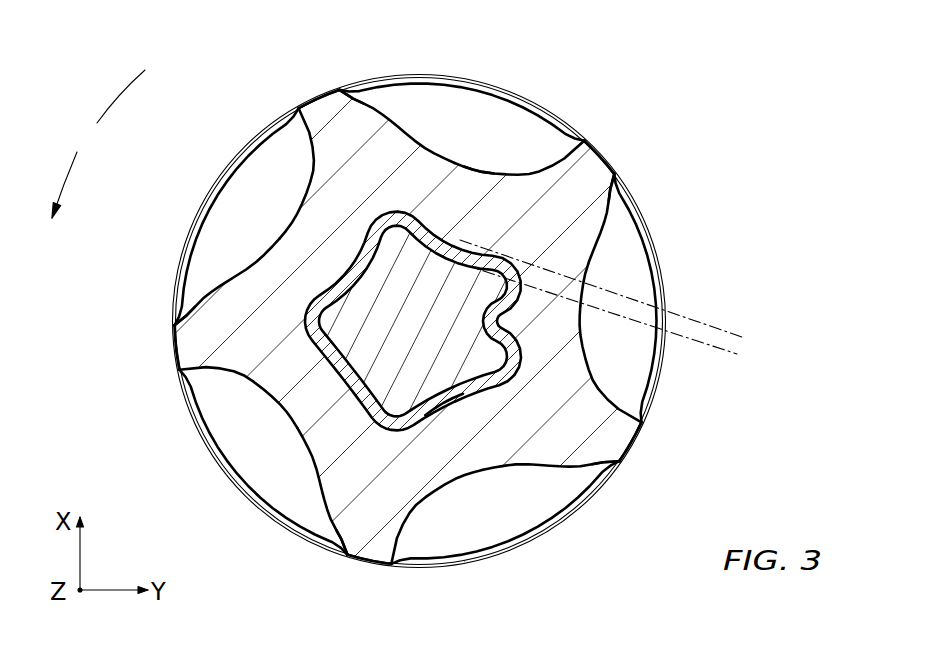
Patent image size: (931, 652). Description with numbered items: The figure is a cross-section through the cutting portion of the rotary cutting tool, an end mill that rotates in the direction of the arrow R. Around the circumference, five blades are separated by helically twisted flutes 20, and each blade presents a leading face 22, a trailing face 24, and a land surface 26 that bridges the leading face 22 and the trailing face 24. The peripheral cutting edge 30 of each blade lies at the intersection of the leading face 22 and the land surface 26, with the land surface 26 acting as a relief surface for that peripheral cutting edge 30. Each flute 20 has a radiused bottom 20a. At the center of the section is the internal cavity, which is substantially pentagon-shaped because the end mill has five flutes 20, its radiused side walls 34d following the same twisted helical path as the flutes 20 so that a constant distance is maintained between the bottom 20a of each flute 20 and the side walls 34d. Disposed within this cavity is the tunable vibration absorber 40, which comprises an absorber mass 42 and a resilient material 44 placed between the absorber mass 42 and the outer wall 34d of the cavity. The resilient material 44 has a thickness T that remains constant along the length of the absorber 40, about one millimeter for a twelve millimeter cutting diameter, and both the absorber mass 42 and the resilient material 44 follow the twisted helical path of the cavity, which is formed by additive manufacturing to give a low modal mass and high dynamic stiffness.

The flute 20 is at (404, 325).
The bottom of flute 20a is at (480, 171).
The leading face 22 is at (312, 160).
The trailing face 24 is at (227, 280).
The land surface 26 is at (298, 110).
The peripheral cutting edge 30 is at (308, 104).
The side wall of internal cavity 34d is at (440, 404).
The tunable vibration absorber 40 is at (333, 372).
The absorber mass 42 is at (397, 352).
The resilient material 44 is at (430, 235).
The thickness of resilient material T is at (718, 349).
The direction of rotation R is at (98, 144).